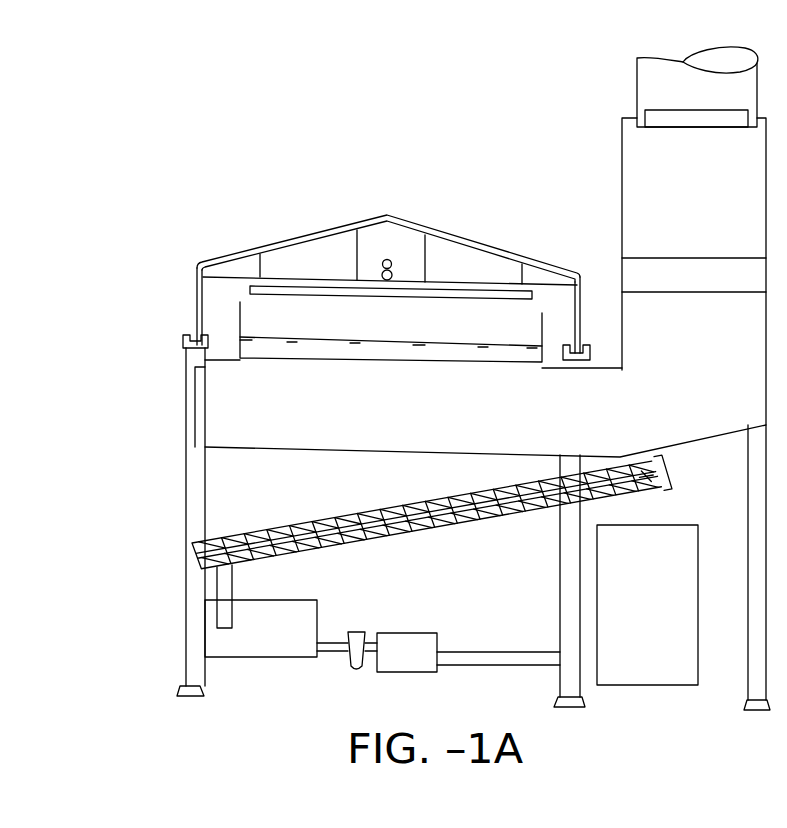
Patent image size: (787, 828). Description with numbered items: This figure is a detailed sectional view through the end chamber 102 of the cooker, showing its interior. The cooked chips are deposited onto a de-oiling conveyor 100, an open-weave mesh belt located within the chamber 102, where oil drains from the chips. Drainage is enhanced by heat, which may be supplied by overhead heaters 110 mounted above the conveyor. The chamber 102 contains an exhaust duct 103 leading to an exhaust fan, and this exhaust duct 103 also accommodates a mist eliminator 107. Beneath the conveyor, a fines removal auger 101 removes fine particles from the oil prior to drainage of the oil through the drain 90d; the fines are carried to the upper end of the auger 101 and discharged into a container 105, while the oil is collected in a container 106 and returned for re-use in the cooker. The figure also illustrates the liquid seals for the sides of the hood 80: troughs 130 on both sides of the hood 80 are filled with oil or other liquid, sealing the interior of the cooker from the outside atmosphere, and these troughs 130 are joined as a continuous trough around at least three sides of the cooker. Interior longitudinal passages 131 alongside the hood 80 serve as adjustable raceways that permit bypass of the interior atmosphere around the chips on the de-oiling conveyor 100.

The hood 80 is at (268, 246).
The overhead heaters 110 is at (341, 288).
The interior longitudinal passages 131 is at (223, 357).
The troughs 130 is at (188, 337).
The mist eliminator 107 is at (648, 258).
The de-oiling conveyor 100 is at (421, 340).
The exhaust duct 103 is at (471, 522).
The end chamber 102 is at (521, 567).
The fines removal auger 101 is at (394, 538).
The drain 90d is at (233, 568).
The container 105 is at (647, 605).
The container 106 is at (258, 657).